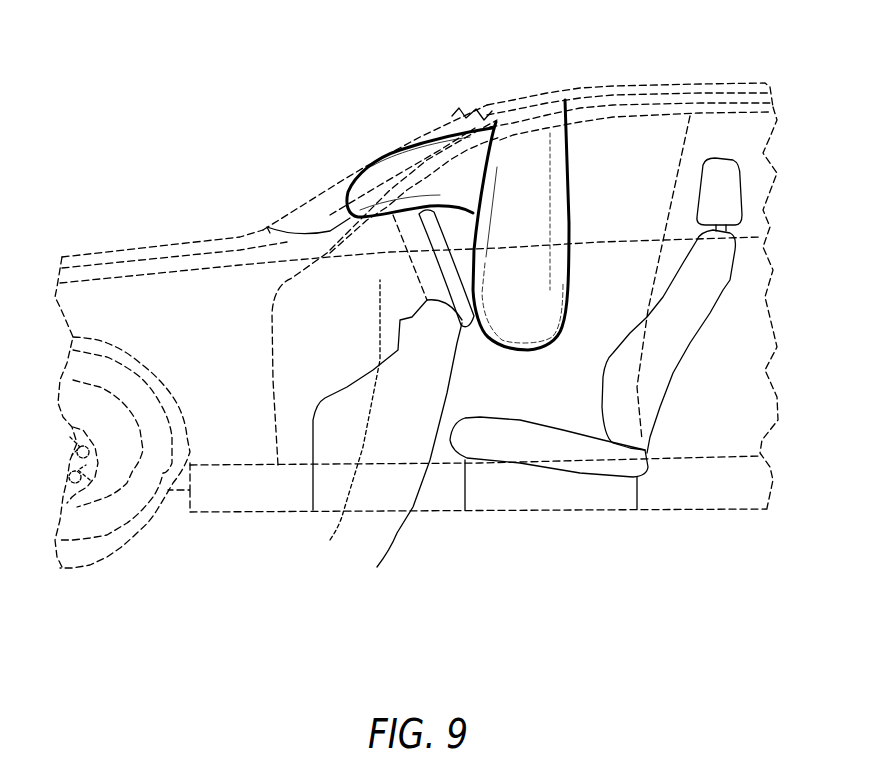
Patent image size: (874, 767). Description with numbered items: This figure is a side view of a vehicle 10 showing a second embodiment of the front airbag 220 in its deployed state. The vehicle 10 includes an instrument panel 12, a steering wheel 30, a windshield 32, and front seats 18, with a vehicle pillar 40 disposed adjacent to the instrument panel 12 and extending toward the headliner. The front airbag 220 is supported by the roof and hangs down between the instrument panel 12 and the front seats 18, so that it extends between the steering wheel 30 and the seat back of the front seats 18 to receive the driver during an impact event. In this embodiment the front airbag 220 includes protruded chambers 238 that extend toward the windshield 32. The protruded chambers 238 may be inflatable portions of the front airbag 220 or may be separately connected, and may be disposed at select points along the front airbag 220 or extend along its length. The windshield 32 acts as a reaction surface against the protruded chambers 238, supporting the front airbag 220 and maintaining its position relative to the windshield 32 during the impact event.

The vehicle 10 is at (288, 82).
The instrument panel 12 is at (330, 540).
The front seats 18 is at (727, 188).
The steering wheel 30 is at (377, 567).
The windshield 32 is at (470, 199).
The vehicle pillar 40 is at (450, 152).
The front airbag 220 is at (533, 160).
The protruded chambers 238 is at (394, 144).